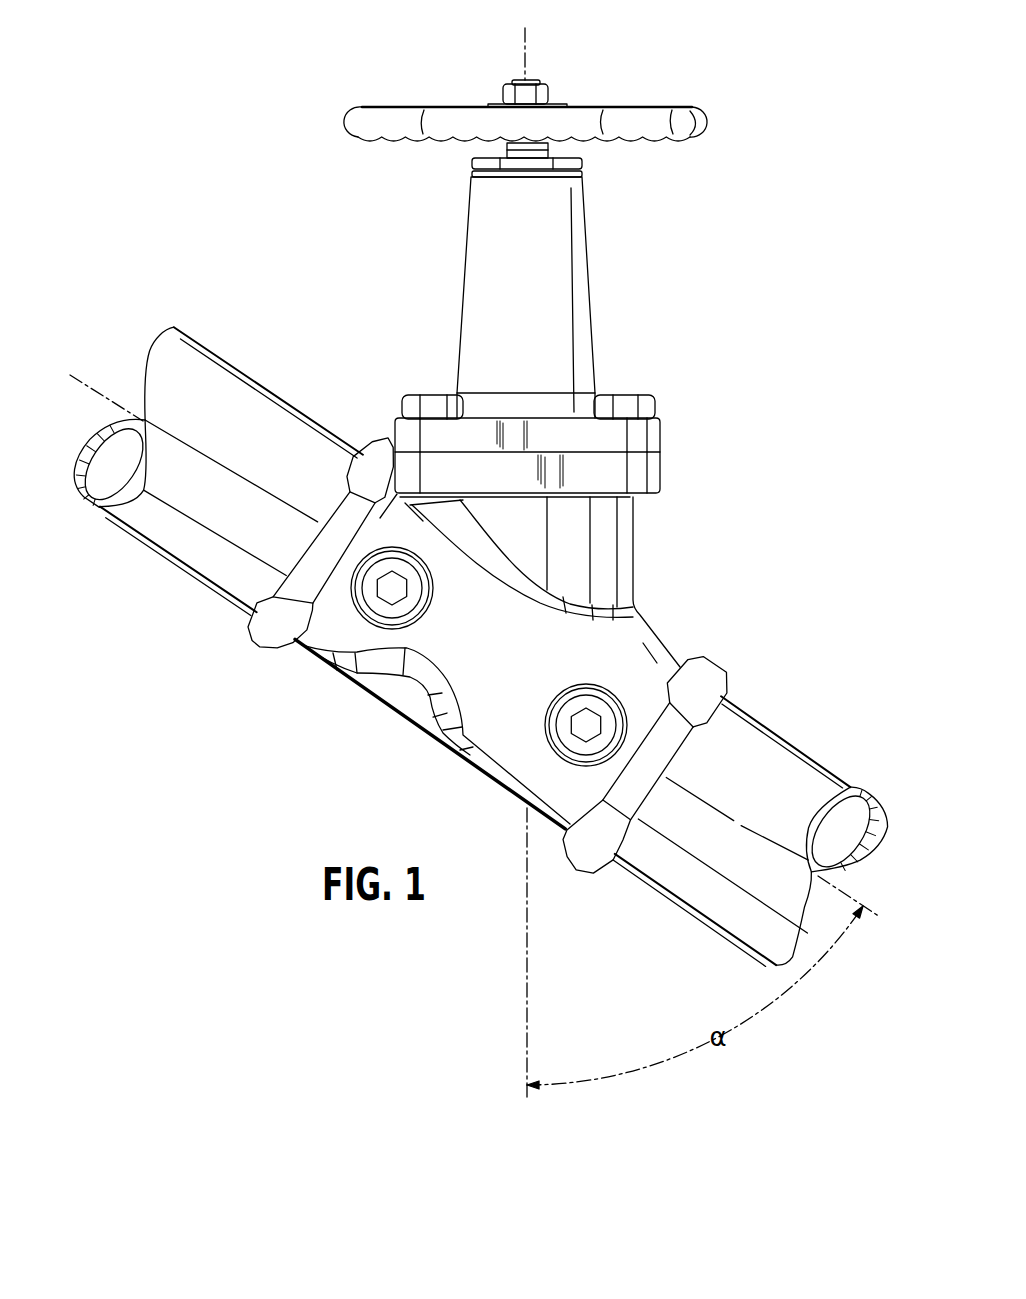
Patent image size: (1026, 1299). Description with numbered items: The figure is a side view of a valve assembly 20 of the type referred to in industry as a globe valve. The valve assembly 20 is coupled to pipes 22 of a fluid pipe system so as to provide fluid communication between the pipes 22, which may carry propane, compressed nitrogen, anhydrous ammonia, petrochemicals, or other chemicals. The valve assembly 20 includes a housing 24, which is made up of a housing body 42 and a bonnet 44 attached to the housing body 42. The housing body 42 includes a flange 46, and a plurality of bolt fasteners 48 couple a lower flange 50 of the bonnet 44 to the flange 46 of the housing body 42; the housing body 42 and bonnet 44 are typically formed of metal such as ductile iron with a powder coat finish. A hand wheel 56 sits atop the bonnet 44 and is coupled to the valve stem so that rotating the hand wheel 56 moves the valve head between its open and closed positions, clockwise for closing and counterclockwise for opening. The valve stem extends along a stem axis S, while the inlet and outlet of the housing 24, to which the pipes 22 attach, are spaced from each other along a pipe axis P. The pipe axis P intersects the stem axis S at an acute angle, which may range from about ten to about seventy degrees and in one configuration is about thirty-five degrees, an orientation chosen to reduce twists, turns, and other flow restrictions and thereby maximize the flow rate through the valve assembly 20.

The valve assembly 20 is at (477, 529).
The pipes 22 is at (176, 547).
The housing 24 is at (472, 665).
The housing body 42 is at (402, 698).
The bonnet 44 is at (581, 300).
The flange 46 is at (655, 468).
The bolt fasteners 48 is at (434, 402).
The lower flange 50 is at (655, 437).
The hand wheel 56 is at (650, 116).
The stem axis S is at (526, 567).
The pipe axis P is at (471, 652).